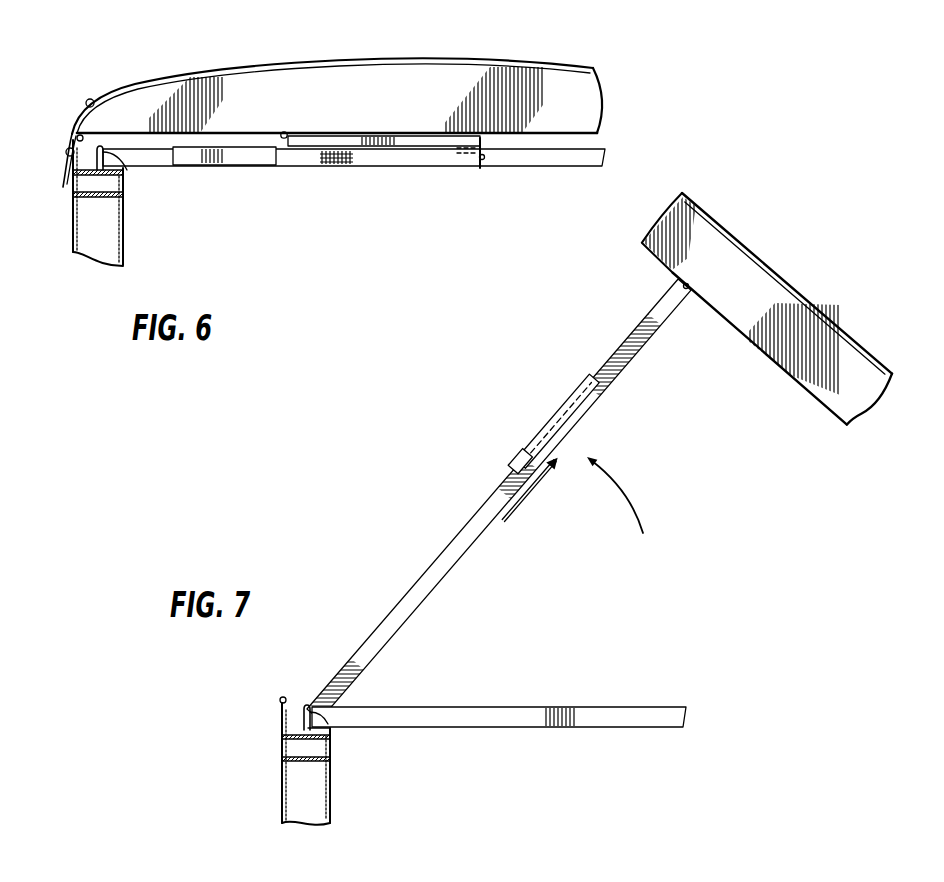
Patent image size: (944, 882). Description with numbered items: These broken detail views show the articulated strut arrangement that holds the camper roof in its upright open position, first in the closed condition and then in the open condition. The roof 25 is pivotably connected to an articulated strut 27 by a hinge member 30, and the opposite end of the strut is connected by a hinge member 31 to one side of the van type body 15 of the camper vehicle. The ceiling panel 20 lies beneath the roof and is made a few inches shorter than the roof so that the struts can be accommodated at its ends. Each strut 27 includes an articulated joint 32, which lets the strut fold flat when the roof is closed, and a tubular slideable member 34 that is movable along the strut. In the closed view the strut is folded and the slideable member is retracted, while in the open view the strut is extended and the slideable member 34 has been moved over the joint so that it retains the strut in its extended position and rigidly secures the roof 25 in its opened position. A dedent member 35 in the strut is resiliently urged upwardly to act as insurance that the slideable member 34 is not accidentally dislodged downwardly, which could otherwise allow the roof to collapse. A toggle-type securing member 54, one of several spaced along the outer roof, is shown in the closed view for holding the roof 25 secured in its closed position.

In FIG. 6, the van type body 15 is at (73, 200).
In FIG. 7, the van type body 15 is at (282, 780).
In FIG. 6, the ceiling panel 20 is at (548, 160).
In FIG. 7, the ceiling panel 20 is at (493, 710).
In FIG. 6, the roof 25 is at (423, 58).
In FIG. 7, the roof 25 is at (753, 227).
In FIG. 6, the articulated strut 27 is at (408, 151).
In FIG. 7, the articulated strut 27 is at (617, 353).
In FIG. 6, the hinge member 30 is at (285, 132).
In FIG. 7, the hinge member 30 is at (697, 293).
In FIG. 6, the hinge member 31 is at (123, 174).
In FIG. 7, the hinge member 31 is at (330, 732).
In FIG. 6, the articulated joint 32 is at (480, 164).
In FIG. 6, the tubular slideable member 34 is at (242, 158).
In FIG. 7, the tubular slideable member 34 is at (573, 398).
In FIG. 7, the dedent member 35 is at (520, 462).
In FIG. 6, the toggle-type securing member 54 is at (70, 133).